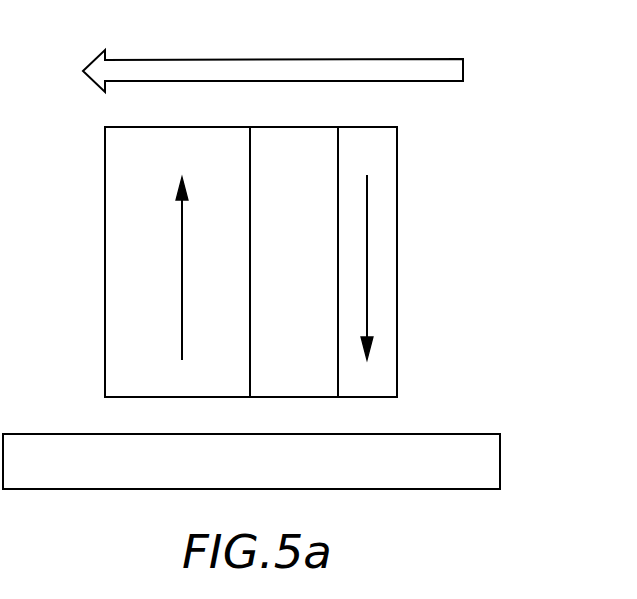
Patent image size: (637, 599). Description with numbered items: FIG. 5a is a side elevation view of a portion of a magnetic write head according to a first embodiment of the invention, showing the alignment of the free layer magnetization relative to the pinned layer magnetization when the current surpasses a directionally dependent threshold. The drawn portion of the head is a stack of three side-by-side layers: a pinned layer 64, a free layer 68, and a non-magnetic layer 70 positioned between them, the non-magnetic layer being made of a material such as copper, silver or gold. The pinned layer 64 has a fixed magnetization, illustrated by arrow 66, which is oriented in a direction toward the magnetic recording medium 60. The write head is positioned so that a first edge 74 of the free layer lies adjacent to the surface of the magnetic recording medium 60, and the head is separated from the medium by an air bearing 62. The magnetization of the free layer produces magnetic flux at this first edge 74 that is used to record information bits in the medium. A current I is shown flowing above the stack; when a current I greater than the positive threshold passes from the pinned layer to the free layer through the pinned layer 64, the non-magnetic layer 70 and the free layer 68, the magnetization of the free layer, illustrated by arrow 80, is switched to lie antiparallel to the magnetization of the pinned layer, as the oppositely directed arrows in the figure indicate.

The current I is at (352, 58).
The magnetic recording medium 60 is at (487, 460).
The air bearing 62 is at (388, 414).
The pinned layer 64 is at (387, 217).
The arrow illustrating pinned layer magnetization 66 is at (368, 290).
The free layer 68 is at (118, 222).
The non-magnetic layer 70 is at (293, 126).
The first edge of the free layer 74 is at (180, 398).
The arrow illustrating free layer magnetization 80 is at (180, 292).